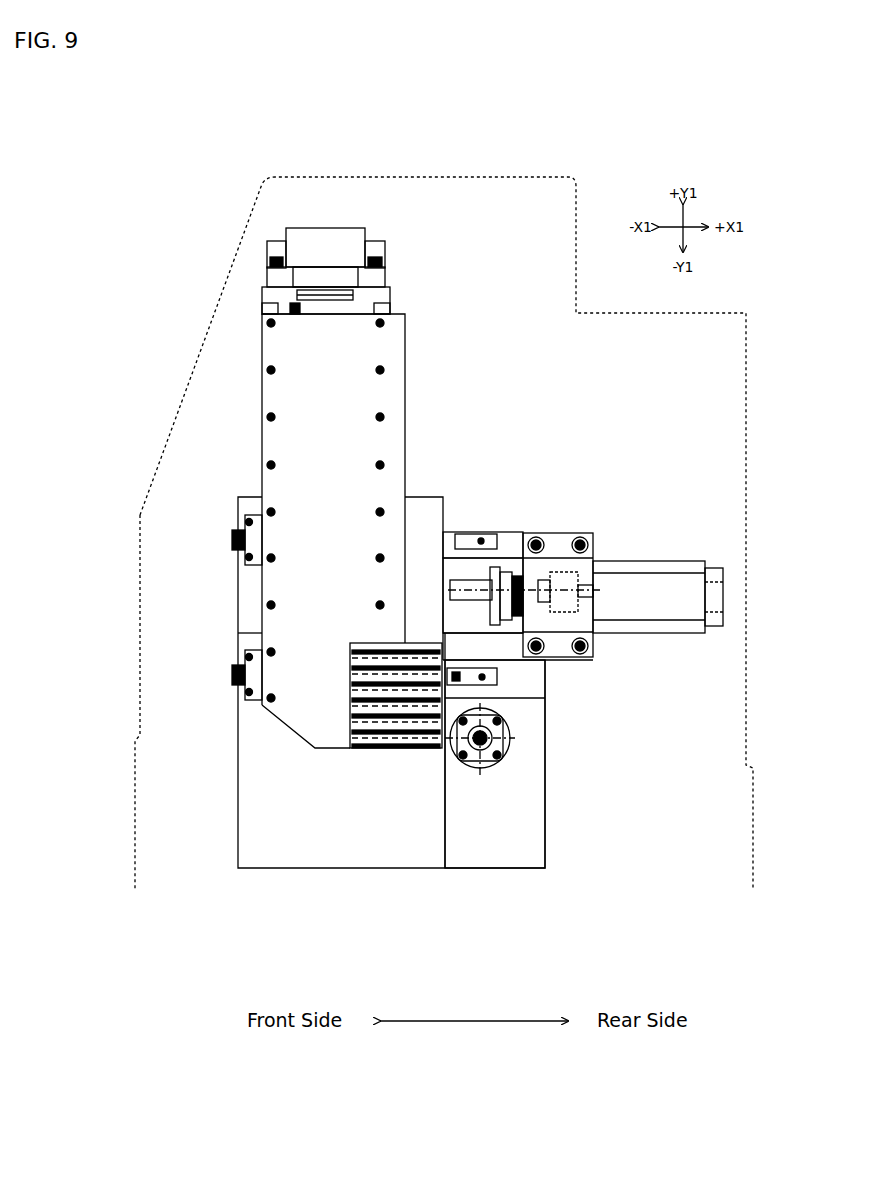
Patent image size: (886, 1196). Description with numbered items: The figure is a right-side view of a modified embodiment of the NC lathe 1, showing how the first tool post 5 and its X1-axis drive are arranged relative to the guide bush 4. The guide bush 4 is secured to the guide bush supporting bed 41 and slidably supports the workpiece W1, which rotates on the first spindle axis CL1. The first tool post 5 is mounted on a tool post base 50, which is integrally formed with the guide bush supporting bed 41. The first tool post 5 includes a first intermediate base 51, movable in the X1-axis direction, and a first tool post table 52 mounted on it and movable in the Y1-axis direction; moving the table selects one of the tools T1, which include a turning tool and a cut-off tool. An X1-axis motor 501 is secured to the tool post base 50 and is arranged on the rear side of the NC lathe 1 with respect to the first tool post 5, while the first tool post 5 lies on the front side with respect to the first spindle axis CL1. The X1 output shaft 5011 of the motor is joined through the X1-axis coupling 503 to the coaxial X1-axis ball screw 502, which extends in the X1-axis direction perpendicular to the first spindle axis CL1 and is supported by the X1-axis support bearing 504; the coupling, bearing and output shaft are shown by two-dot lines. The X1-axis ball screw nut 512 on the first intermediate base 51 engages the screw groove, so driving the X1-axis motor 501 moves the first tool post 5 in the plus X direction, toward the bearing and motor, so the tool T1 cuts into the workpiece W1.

The NC lathe 1 is at (195, 362).
The first tool post 5 is at (250, 477).
The tool post base 50 is at (338, 870).
The first intermediate base 51 is at (420, 497).
The first tool post table 52 is at (405, 372).
The X1-axis ball screw nut 512 is at (463, 587).
The X1-axis ball screw 502 is at (510, 560).
The X1-axis support bearing 504 is at (537, 580).
The X1 output shaft 5011 is at (595, 640).
The X1-axis motor 501 is at (668, 563).
The X1-axis coupling 503 is at (592, 568).
The guide bush supporting bed 41 is at (540, 845).
The guide bush 4 is at (500, 742).
The workpiece W1 is at (490, 730).
The first spindle axis CL1 is at (492, 773).
The tool T1 is at (440, 745).